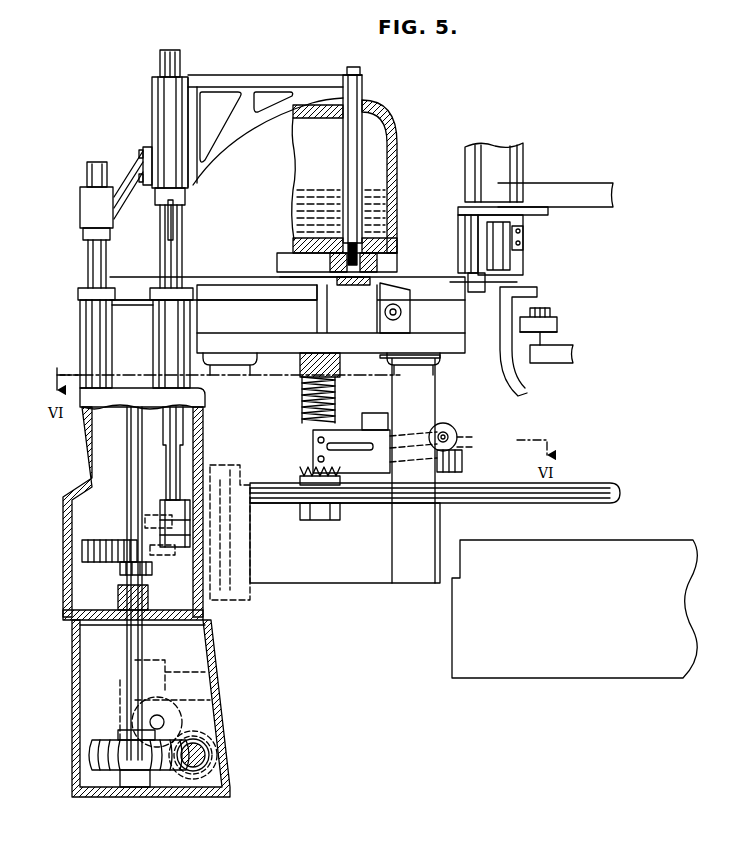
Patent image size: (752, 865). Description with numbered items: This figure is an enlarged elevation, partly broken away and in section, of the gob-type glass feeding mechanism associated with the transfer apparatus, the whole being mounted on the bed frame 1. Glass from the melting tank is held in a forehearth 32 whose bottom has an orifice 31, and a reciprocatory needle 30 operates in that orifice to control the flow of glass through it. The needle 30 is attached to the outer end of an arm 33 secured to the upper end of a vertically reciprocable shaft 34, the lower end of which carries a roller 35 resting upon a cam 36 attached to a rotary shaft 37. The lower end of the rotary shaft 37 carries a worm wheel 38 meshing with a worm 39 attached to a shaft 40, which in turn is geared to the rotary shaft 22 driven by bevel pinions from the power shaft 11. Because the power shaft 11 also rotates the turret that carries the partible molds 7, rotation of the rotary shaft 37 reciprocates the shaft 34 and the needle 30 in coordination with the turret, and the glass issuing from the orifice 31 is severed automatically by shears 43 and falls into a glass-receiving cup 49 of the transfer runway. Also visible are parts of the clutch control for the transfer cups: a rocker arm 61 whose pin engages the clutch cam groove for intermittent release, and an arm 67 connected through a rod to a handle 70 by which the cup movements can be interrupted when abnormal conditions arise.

The bed frame 1 is at (643, 542).
The partible mold 7 is at (504, 352).
The power shaft 11 is at (582, 481).
The shaft 22 is at (205, 700).
The reciprocatory needle 30 is at (357, 157).
The orifice 31 is at (357, 227).
The forehearth 32 is at (398, 148).
The arm 33 is at (265, 78).
The vertically reciprocable shaft 34 is at (174, 458).
The roller 35 is at (185, 558).
The cam 36 is at (90, 557).
The rotary shaft 37 is at (128, 470).
The worm wheel 38 is at (100, 772).
The worm 39 is at (206, 755).
The shaft 40 is at (200, 770).
The shears 43 is at (320, 270).
The glass-receiving cup 49 is at (372, 281).
The rocker arm 61 is at (348, 460).
The arm 67 is at (347, 433).
The handle 70 is at (451, 424).